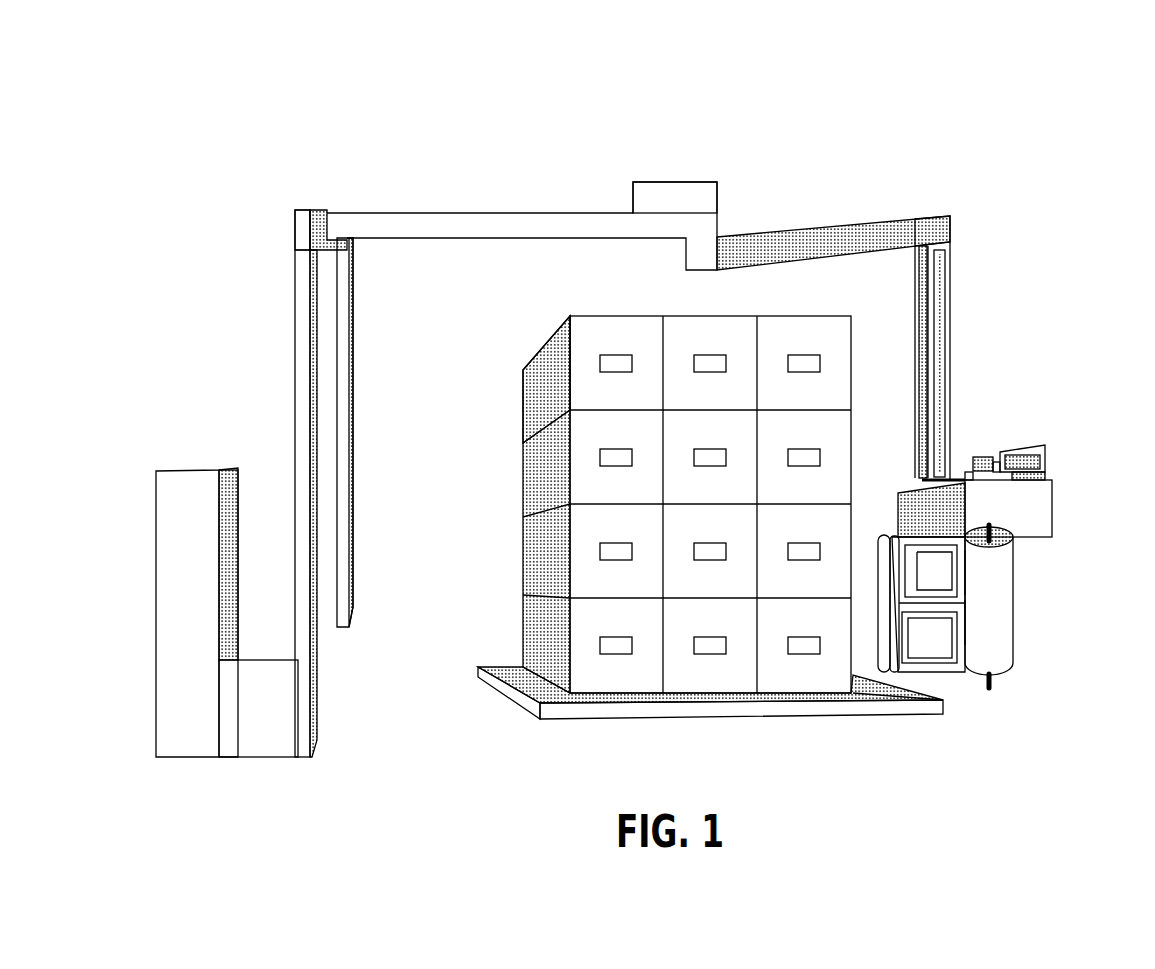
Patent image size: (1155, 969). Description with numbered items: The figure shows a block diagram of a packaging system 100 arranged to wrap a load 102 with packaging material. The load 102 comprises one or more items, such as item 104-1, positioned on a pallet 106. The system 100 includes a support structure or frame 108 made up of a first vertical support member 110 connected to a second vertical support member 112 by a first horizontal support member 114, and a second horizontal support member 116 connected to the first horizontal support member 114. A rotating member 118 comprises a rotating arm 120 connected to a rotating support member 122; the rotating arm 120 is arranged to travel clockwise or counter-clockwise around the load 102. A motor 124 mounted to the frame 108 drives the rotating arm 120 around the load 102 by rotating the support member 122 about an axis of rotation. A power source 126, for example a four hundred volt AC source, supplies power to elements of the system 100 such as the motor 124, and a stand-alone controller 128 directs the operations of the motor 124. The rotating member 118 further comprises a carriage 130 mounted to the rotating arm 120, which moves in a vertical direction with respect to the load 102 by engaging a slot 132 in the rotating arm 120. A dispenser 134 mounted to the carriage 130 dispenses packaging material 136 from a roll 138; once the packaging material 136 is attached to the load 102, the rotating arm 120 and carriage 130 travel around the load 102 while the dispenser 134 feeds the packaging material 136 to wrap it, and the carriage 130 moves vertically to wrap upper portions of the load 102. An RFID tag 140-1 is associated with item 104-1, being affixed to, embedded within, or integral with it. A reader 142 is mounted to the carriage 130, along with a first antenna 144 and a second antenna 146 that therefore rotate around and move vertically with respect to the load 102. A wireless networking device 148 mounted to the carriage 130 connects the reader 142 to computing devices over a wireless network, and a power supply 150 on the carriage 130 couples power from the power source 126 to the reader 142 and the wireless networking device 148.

The system 100 is at (683, 60).
The load 102 is at (631, 475).
The item 104-1 is at (523, 407).
The pallet 106 is at (497, 666).
The frame 108 is at (342, 212).
The first vertical support member 110 is at (295, 280).
The second vertical support member 112 is at (353, 277).
The first horizontal support member 114 is at (295, 230).
The second horizontal support member 116 is at (408, 213).
The rotating member 118 is at (923, 212).
The rotating arm 120 is at (951, 259).
The rotating support member 122 is at (842, 225).
The motor 124 is at (675, 182).
The power source 126 is at (262, 660).
The controller 128 is at (156, 613).
The carriage 130 is at (1053, 510).
The slot 132 is at (951, 307).
The dispenser 134 is at (885, 678).
The packaging material 136 is at (909, 568).
The roll 138 is at (1014, 660).
The RFID tag 140-1 is at (616, 355).
The reader 142 is at (1046, 445).
The first antenna 144 is at (1014, 573).
The second antenna 146 is at (1014, 622).
The wireless networking device 148 is at (988, 457).
The power supply 150 is at (1050, 477).